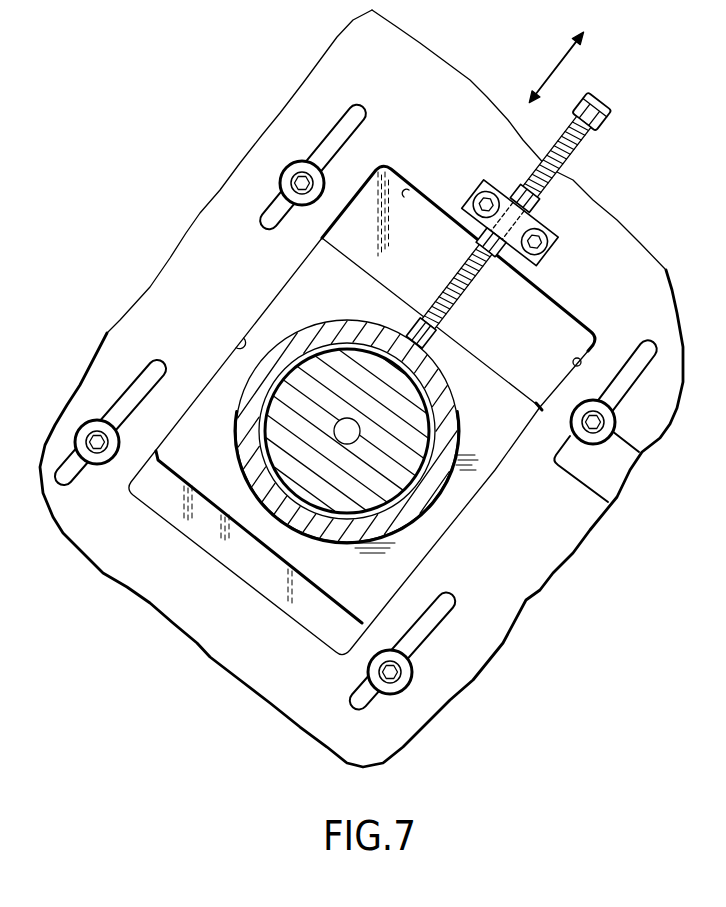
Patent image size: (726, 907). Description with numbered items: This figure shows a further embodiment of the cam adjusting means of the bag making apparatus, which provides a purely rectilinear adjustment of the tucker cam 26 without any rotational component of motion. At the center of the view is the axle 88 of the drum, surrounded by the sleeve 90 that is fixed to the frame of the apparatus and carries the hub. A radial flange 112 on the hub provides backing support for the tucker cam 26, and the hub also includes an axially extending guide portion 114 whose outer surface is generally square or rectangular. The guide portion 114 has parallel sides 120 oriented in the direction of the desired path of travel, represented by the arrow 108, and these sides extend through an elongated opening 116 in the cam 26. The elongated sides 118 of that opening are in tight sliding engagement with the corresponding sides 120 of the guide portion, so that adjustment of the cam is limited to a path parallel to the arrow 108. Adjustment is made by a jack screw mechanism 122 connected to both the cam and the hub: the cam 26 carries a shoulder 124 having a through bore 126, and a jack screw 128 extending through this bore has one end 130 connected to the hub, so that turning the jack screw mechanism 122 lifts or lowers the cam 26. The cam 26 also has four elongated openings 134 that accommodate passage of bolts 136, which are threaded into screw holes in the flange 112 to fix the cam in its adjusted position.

The tucker cam 26 is at (556, 567).
The axle of the drum 88 is at (317, 497).
The sleeve 90 is at (243, 447).
The arrow 108 is at (553, 68).
The radial flange 112 is at (538, 342).
The guide portion 114 is at (498, 375).
The elongated opening 116 is at (409, 190).
The elongated sides 118 is at (236, 342).
The parallel sides 120 is at (283, 285).
The jack screw mechanism 122 is at (505, 170).
The shoulder 124 is at (549, 221).
The through bore 126 is at (549, 258).
The jack screw 128 is at (577, 153).
The end of jack screw 130 is at (466, 298).
The elongated openings 134 is at (333, 133).
The bolts 136 is at (281, 180).